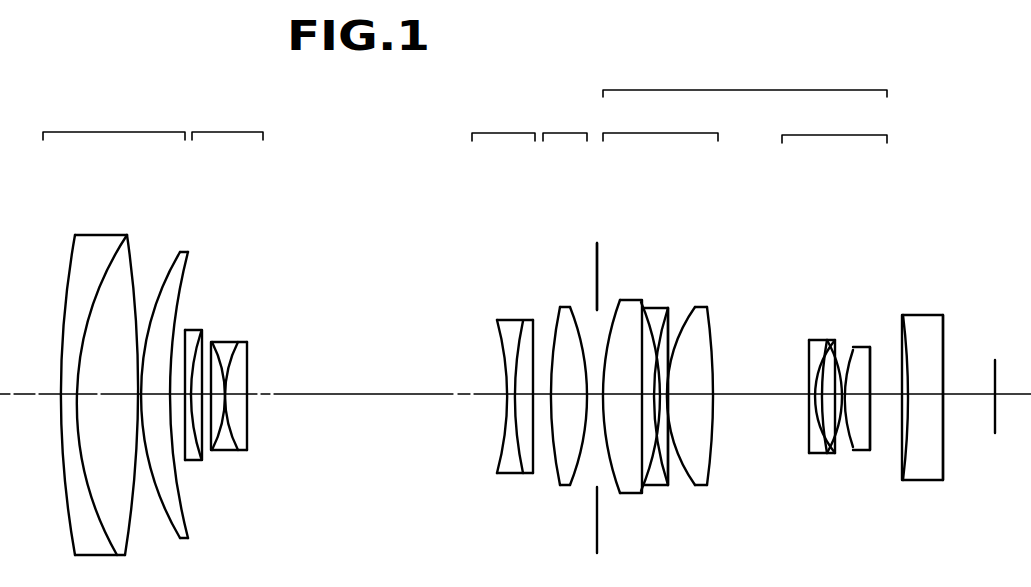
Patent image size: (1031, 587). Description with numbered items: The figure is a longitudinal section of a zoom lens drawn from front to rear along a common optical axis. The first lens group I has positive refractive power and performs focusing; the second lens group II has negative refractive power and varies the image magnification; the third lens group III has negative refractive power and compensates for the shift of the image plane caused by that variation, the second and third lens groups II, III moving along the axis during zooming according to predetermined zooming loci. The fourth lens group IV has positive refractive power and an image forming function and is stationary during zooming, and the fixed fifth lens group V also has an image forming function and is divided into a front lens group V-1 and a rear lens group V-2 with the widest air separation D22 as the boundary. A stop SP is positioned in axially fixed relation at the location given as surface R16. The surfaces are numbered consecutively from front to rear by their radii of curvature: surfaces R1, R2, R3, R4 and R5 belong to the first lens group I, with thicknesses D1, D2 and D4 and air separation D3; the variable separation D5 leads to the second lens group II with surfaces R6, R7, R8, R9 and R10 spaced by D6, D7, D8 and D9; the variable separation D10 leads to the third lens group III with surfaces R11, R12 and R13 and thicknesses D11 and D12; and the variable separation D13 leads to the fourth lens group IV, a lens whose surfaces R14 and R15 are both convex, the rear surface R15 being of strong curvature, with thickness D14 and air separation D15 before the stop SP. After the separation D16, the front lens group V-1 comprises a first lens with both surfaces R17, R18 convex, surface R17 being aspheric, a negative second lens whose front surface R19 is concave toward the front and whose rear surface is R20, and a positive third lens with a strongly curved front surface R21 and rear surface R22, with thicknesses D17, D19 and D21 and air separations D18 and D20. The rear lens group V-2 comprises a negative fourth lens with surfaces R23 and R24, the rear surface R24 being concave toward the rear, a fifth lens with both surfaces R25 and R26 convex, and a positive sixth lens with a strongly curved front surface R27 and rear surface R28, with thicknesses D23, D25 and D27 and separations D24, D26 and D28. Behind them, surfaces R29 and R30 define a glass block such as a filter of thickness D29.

The first lens group I is at (114, 119).
The second lens group II is at (227, 119).
The third lens group III is at (503, 121).
The fourth lens group IV is at (565, 121).
The fifth lens group V is at (745, 77).
The front lens group V-1 is at (660, 121).
The rear lens group V-2 is at (834, 123).
The stop SP is at (585, 302).
The radius of curvature of first surface R1 is at (68, 267).
The radius of curvature of second surface R2 is at (90, 290).
The radius of curvature of third surface R3 is at (115, 247).
The radius of curvature of fourth surface R4 is at (168, 273).
The radius of curvature of fifth surface R5 is at (180, 258).
The radius of curvature of sixth surface R6 is at (185, 328).
The radius of curvature of seventh surface R7 is at (203, 330).
The radius of curvature of eighth surface R8 is at (222, 342).
The radius of curvature of ninth surface R9 is at (238, 342).
The radius of curvature of tenth surface R10 is at (249, 342).
The radius of curvature of eleventh surface R11 is at (494, 322).
The radius of curvature of twelfth surface R12 is at (518, 321).
The radius of curvature of thirteenth surface R13 is at (534, 320).
The radius of curvature of fourteenth surface R14 is at (559, 308).
The radius of curvature of fifteenth surface R15 is at (571, 308).
The stop surface R16 is at (598, 243).
The radius of curvature of seventeenth surface R17 is at (620, 300).
The radius of curvature of eighteenth surface R18 is at (641, 302).
The radius of curvature of nineteenth surface R19 is at (664, 308).
The radius of curvature of twentieth surface R20 is at (670, 308).
The radius of curvature of twenty-first surface R21 is at (694, 307).
The radius of curvature of twenty-second surface R22 is at (708, 307).
The radius of curvature of twenty-third surface R23 is at (808, 340).
The radius of curvature of twenty-fourth surface R24 is at (832, 340).
The radius of curvature of twenty-fifth surface R25 is at (828, 340).
The radius of curvature of twenty-sixth surface R26 is at (830, 340).
The radius of curvature of twenty-seventh surface R27 is at (854, 347).
The radius of curvature of twenty-eighth surface R28 is at (870, 347).
The radius of curvature of twenty-ninth surface R29 is at (907, 335).
The radius of curvature of thirtieth surface R30 is at (944, 325).
The axial thickness D1 is at (66, 397).
The axial thickness D2 is at (100, 397).
The air separation D3 is at (137, 397).
The axial thickness D4 is at (145, 397).
The variable air separation D5 is at (178, 397).
The axial thickness D6 is at (188, 397).
The air separation D7 is at (205, 397).
The axial thickness D8 is at (227, 397).
The axial thickness D9 is at (246, 397).
The variable air separation D10 is at (365, 395).
The axial thickness D11 is at (509, 397).
The axial thickness D12 is at (521, 397).
The variable air separation D13 is at (542, 397).
The axial thickness D14 is at (565, 397).
The air separation D15 is at (593, 397).
The air separation D16 is at (627, 397).
The axial thickness D17 is at (638, 397).
The air separation D18 is at (650, 397).
The axial thickness D19 is at (656, 397).
The air separation D20 is at (690, 397).
The axial thickness D21 is at (700, 397).
The widest air separation D22 is at (760, 397).
The axial thickness D23 is at (811, 397).
The air separation D24 is at (818, 397).
The axial thickness D25 is at (825, 397).
The air separation D26 is at (845, 397).
The axial thickness D27 is at (858, 397).
The air separation D28 is at (886, 397).
The axial thickness D29 is at (925, 397).